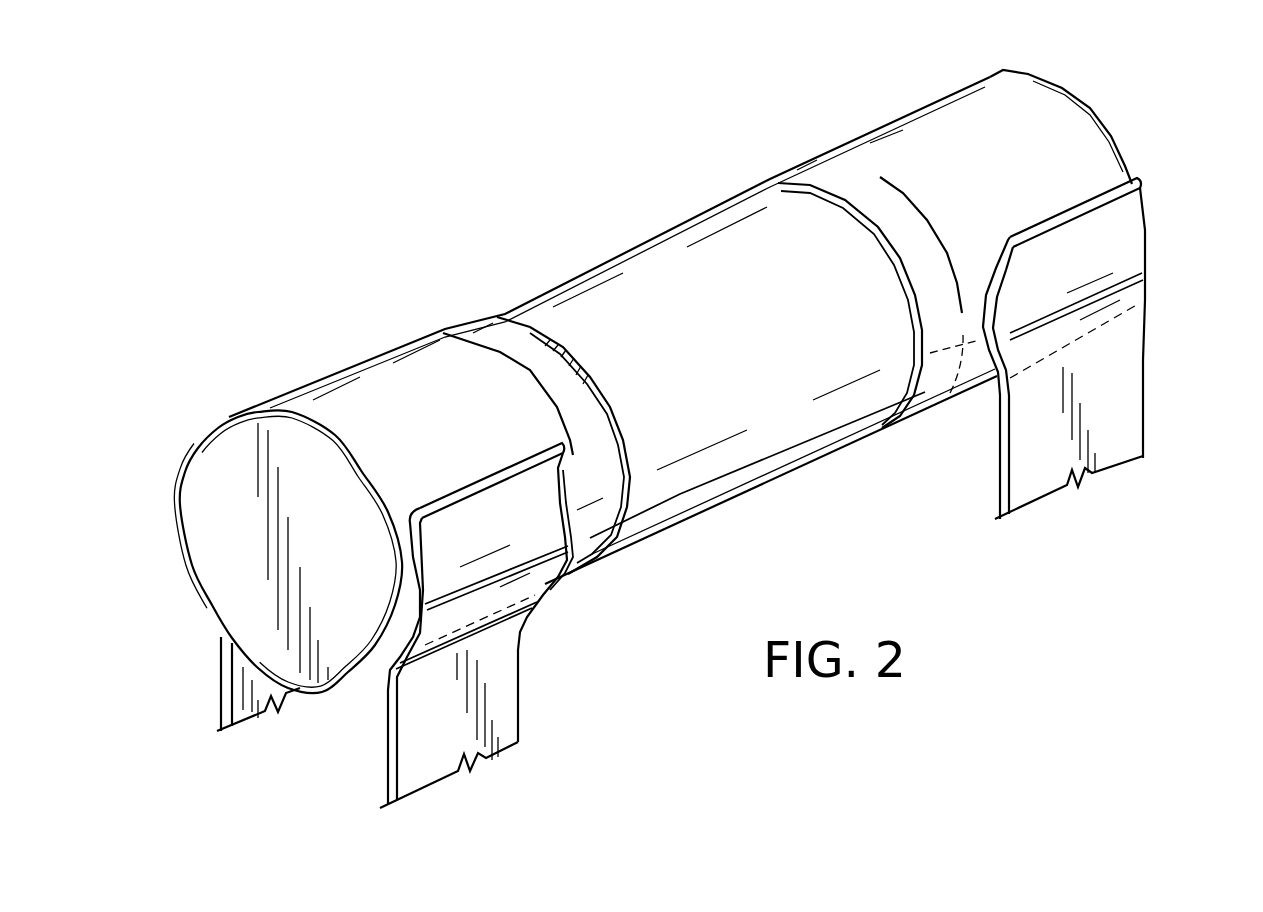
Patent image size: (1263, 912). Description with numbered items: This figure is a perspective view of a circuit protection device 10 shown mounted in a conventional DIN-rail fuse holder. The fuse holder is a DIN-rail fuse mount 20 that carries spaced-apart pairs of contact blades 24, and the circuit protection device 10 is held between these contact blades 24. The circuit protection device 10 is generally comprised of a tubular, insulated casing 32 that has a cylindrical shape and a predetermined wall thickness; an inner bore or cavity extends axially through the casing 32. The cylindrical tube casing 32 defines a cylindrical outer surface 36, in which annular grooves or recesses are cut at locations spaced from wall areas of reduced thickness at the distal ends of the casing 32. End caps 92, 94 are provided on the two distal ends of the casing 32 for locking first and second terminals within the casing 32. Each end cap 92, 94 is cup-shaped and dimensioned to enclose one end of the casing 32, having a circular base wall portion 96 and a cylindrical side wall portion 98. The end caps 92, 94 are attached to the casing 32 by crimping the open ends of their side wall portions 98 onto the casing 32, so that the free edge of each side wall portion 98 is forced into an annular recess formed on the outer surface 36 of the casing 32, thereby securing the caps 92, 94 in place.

The circuit protection device 10 is at (575, 160).
The DIN-rail fuse mount 20 is at (1160, 333).
The contact blades 24 is at (225, 679).
The casing 32 is at (672, 245).
The outer surface 36 is at (792, 468).
The end cap 92 is at (349, 352).
The end cap 94 is at (896, 105).
The circular base wall portion 96 is at (218, 468).
The cylindrical side wall portion 98 is at (433, 370).